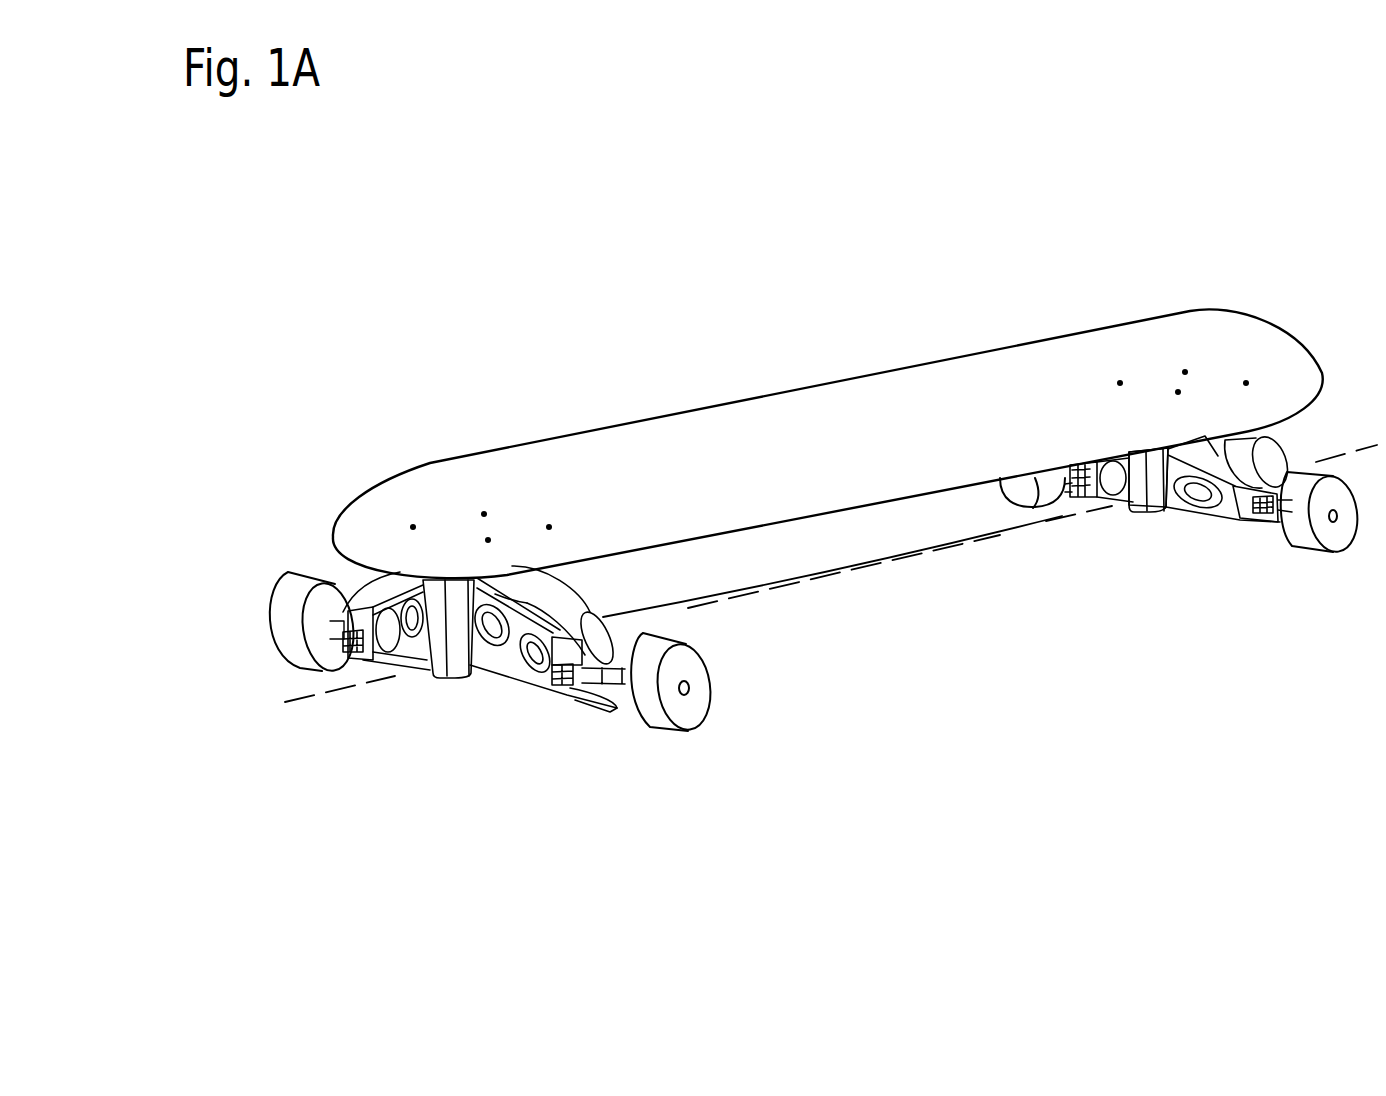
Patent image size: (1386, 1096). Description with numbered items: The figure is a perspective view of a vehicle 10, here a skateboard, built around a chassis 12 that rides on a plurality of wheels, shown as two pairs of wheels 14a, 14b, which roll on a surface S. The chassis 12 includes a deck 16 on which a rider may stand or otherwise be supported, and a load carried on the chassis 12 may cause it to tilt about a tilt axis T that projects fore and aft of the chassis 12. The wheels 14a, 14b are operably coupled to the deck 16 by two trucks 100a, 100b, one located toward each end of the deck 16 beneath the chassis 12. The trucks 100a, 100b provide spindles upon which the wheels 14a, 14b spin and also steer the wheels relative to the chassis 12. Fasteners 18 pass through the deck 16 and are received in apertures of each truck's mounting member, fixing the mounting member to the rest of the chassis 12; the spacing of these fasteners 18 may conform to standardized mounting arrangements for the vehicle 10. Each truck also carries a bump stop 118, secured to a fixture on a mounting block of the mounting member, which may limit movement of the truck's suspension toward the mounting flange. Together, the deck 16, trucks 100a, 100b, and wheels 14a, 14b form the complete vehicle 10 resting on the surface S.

The vehicle 10 is at (1003, 778).
The chassis 12 is at (811, 386).
The wheels 14a is at (277, 620).
The wheels 14b is at (1038, 497).
The deck 16 is at (672, 467).
The fasteners 18 is at (488, 540).
The truck 100a is at (473, 680).
The truck 100b is at (1177, 512).
The bump stop 118 is at (1128, 500).
The tilt axis T is at (299, 700).
The surface S is at (1066, 652).